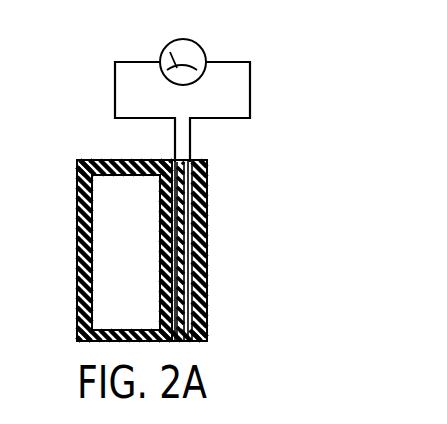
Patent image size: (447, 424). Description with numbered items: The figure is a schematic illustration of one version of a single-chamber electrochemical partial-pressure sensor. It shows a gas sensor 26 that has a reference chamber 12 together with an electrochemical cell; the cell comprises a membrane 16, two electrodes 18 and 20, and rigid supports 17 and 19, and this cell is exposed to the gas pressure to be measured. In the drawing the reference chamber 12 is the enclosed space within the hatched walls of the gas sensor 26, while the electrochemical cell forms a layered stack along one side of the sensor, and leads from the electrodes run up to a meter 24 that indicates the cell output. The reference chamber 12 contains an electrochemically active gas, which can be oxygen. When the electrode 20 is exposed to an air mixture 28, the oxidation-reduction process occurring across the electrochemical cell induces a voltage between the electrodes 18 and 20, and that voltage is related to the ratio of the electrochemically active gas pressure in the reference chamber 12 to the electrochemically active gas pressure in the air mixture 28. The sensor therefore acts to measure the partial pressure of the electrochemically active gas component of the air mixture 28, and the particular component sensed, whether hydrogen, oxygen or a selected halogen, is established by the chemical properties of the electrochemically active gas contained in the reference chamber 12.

The reference chamber 12 is at (137, 258).
The membrane 16 is at (185, 341).
The rigid support 17 is at (166, 290).
The electrode 18 is at (166, 187).
The rigid support 19 is at (203, 238).
The electrode 20 is at (208, 203).
The meter 24 is at (198, 41).
The gas sensor 26 is at (100, 154).
The air mixture 28 is at (243, 298).